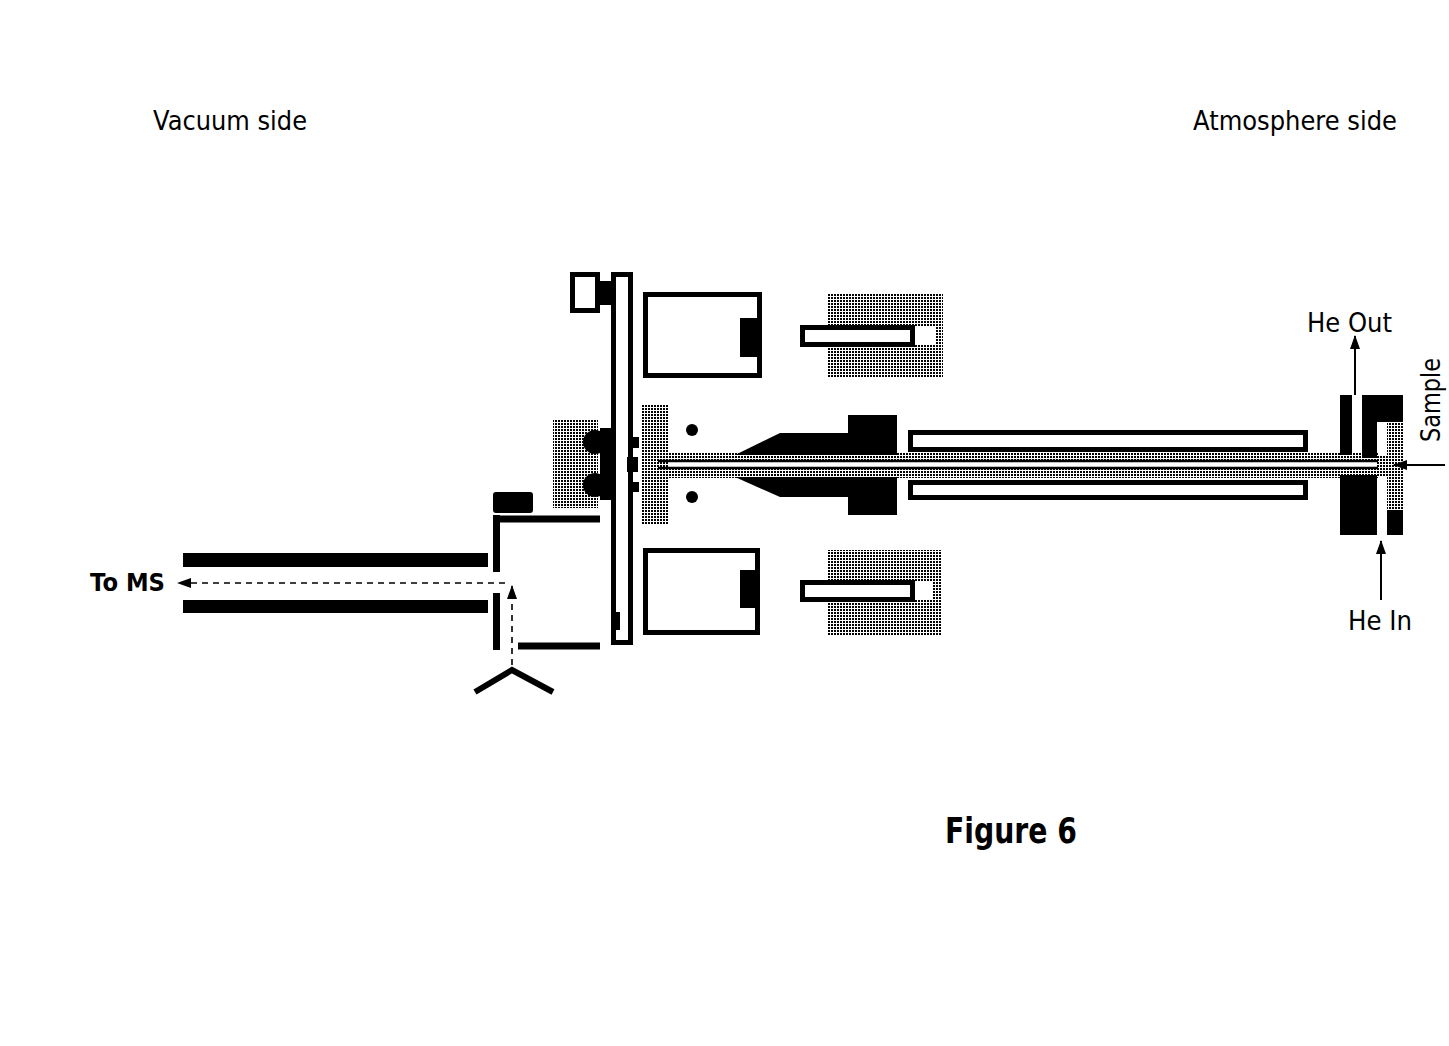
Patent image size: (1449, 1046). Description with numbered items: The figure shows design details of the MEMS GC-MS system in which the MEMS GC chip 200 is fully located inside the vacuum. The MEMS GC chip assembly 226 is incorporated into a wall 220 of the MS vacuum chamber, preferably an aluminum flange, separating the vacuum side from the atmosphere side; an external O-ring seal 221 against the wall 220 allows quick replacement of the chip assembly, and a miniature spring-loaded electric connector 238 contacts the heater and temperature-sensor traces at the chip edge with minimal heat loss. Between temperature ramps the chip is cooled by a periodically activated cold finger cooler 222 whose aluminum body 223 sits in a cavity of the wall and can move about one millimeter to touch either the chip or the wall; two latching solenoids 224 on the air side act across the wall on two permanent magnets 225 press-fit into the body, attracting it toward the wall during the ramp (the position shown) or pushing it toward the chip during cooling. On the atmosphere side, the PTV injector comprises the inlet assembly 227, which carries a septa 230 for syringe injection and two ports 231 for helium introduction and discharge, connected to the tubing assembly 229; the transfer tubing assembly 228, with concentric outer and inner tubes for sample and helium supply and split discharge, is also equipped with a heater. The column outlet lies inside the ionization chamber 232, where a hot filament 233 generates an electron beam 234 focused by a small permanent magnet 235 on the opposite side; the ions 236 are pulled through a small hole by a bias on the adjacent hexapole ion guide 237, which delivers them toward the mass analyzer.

The MEMS GC chip 200 is at (600, 402).
The wall 220 is at (808, 80).
The external O-ring seal 221 is at (712, 500).
The cold finger cooler 222 is at (968, 598).
The body of the cold finger 223 is at (690, 606).
The latching solenoids 224 is at (910, 304).
The permanent magnets 225 is at (766, 324).
The MEMS GC chip assembly 226 is at (1133, 282).
The inlet assembly 227 is at (1328, 436).
The transfer tubing assembly 228 is at (1077, 504).
The tubing assembly 229 is at (898, 455).
The septa 230 is at (1338, 520).
The ports 231 is at (1348, 392).
The ionization chamber 232 is at (490, 648).
The hot filament 233 is at (514, 661).
The electron beam 234 is at (502, 614).
The permanent magnet 235 is at (500, 491).
The ions 236 is at (290, 590).
The hexapole ion guide 237 is at (292, 551).
The spring-loaded electric connector 238 is at (598, 266).